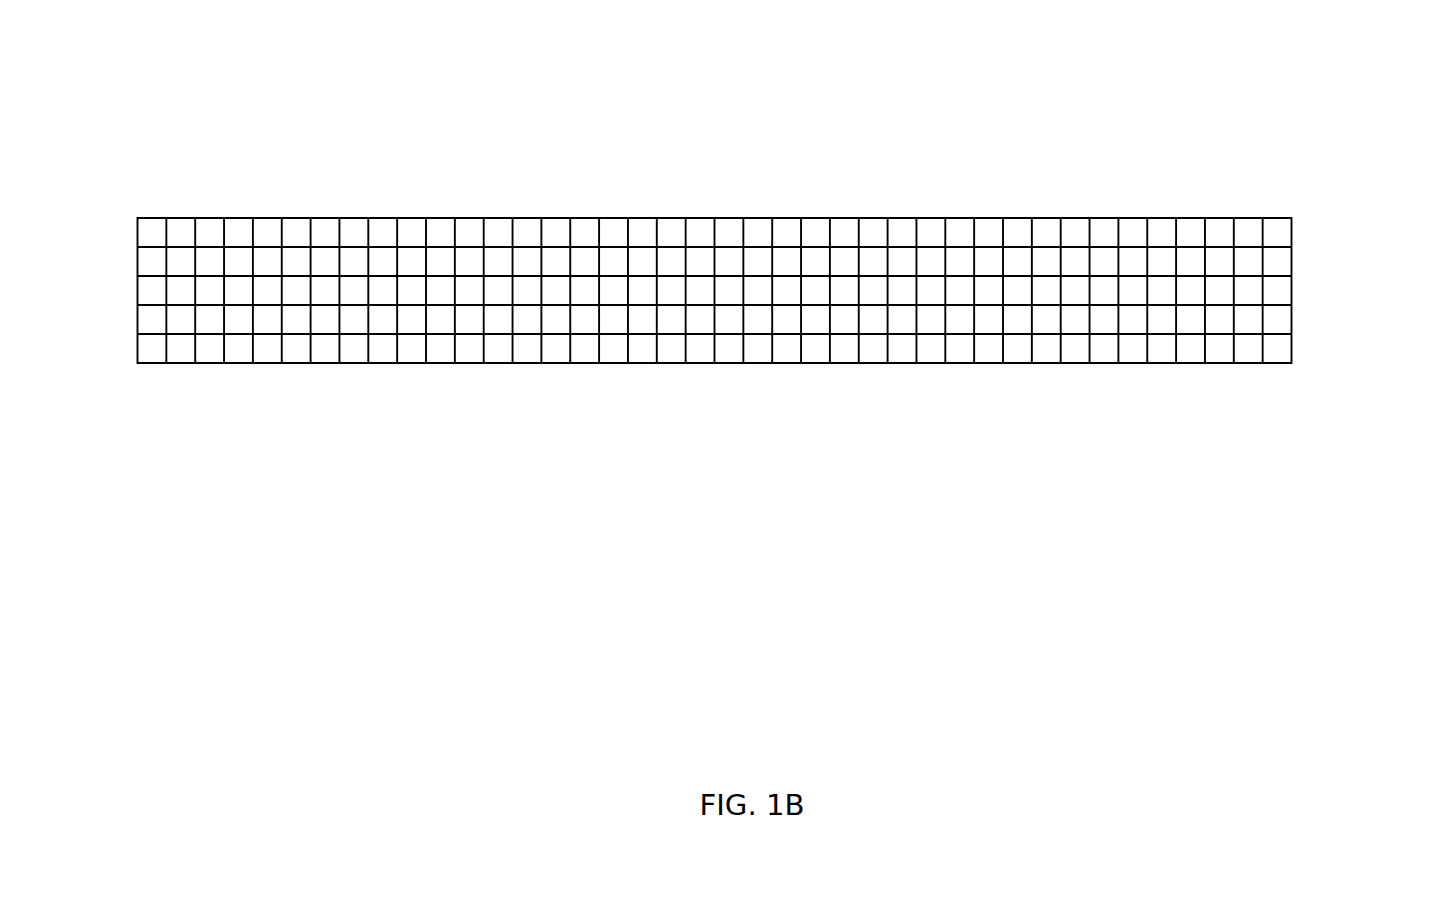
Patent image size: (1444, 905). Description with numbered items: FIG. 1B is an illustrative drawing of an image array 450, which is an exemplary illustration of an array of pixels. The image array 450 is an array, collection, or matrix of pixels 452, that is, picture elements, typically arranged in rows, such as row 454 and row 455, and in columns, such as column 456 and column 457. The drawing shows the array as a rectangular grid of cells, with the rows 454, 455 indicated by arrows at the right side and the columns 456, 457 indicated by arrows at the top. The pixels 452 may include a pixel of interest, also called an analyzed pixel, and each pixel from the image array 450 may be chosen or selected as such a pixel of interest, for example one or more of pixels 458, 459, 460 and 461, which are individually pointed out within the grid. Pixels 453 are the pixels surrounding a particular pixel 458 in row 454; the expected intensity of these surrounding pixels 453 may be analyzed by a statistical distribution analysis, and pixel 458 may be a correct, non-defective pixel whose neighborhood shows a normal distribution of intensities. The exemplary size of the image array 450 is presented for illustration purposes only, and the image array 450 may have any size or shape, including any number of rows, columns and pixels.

The image array 450 is at (413, 218).
The pixels 452 is at (987, 262).
The pixels 453 is at (240, 292).
The row 454 is at (1297, 262).
The row 455 is at (1297, 319).
The column 456 is at (614, 218).
The column 457 is at (741, 218).
The pixel 458 is at (238, 262).
The pixel 459 is at (300, 320).
The pixel 460 is at (468, 322).
The pixel 461 is at (614, 323).